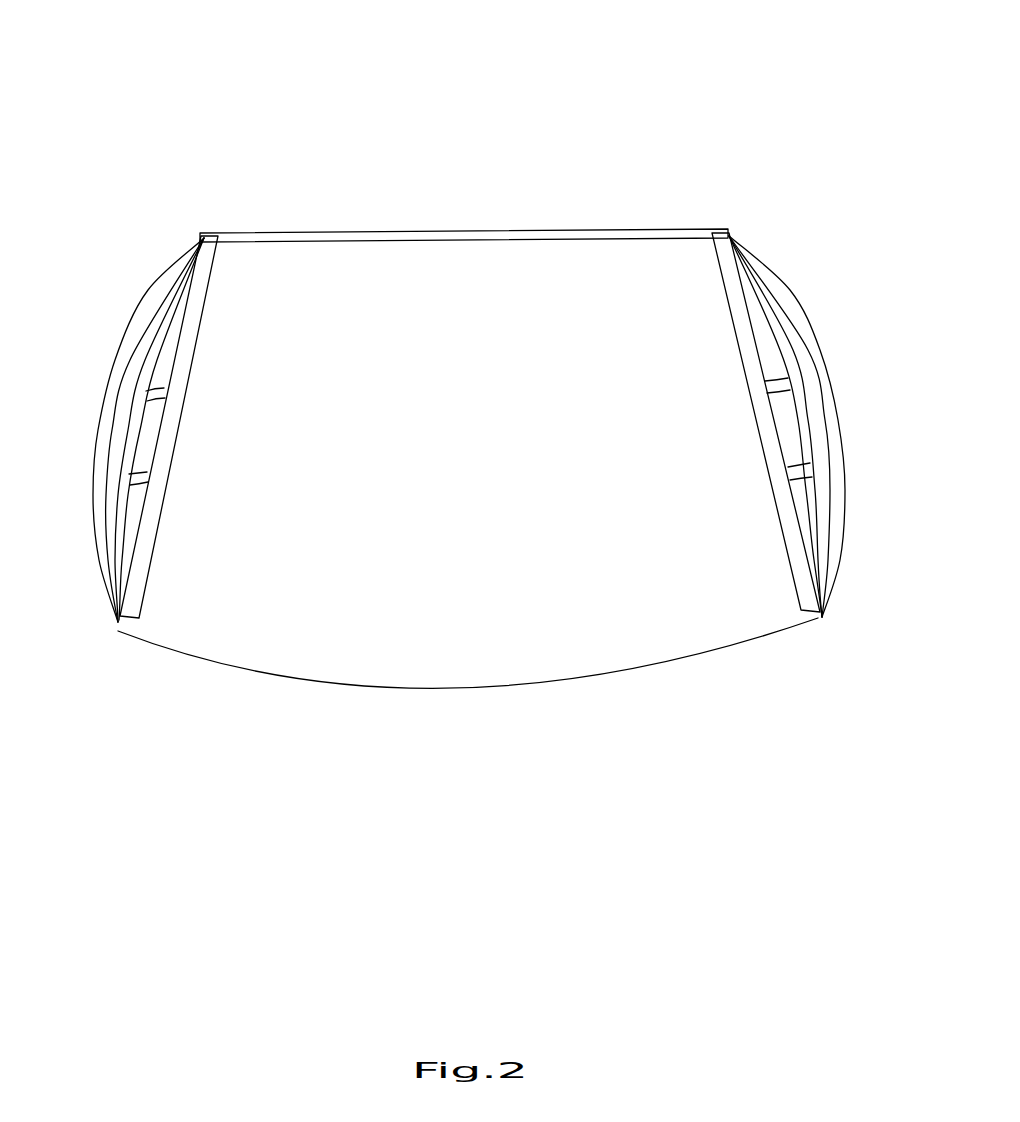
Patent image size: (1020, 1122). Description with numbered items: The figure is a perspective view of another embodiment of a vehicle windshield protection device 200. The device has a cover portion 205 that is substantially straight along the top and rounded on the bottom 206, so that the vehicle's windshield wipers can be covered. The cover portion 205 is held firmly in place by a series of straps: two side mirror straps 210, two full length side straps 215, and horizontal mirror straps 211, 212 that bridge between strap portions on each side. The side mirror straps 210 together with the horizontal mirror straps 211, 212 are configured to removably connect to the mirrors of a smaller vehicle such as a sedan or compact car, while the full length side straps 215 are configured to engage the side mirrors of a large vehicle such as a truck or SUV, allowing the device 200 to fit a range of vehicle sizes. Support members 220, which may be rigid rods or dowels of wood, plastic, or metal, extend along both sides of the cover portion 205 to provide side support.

The vehicle windshield protection device 200 is at (668, 84).
The cover portion 205 is at (648, 258).
The rounded bottom 206 is at (455, 672).
The side mirror straps 210 is at (190, 282).
The full length side straps 215 is at (138, 318).
The horizontal mirror strap 211 is at (152, 393).
The horizontal mirror strap 212 is at (137, 483).
The support members 220 is at (132, 606).